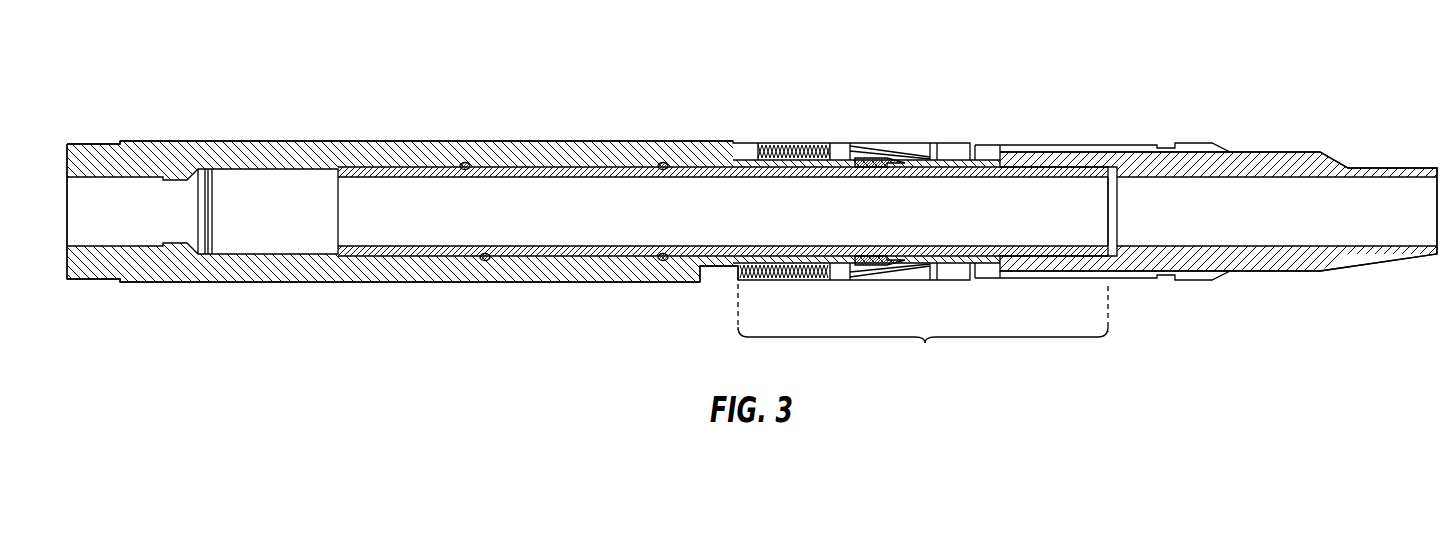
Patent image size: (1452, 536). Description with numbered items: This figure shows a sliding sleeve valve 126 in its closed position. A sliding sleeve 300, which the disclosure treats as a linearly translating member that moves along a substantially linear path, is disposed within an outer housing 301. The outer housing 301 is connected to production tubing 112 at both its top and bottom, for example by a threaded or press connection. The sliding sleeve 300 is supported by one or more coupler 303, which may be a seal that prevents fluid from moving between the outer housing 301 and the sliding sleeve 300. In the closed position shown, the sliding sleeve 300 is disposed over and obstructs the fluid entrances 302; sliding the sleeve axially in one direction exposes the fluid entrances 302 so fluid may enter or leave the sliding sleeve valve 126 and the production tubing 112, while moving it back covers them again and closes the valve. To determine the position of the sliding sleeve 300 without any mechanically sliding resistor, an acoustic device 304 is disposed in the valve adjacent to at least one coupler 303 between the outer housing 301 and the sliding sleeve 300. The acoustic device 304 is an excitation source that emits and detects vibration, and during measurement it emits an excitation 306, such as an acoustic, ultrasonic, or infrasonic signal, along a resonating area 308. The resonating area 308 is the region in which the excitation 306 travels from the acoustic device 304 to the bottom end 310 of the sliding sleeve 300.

The production tubing 112 is at (137, 141).
The sliding sleeve valve 126 is at (1186, 110).
The sliding sleeve 300 is at (485, 258).
The outer housing 301 is at (385, 141).
The fluid entrances 302 is at (985, 155).
The coupler 303 is at (465, 163).
The acoustic device 304 is at (720, 284).
The excitation 306 is at (822, 270).
The resonating area 308 is at (923, 333).
The bottom end 310 is at (1110, 250).